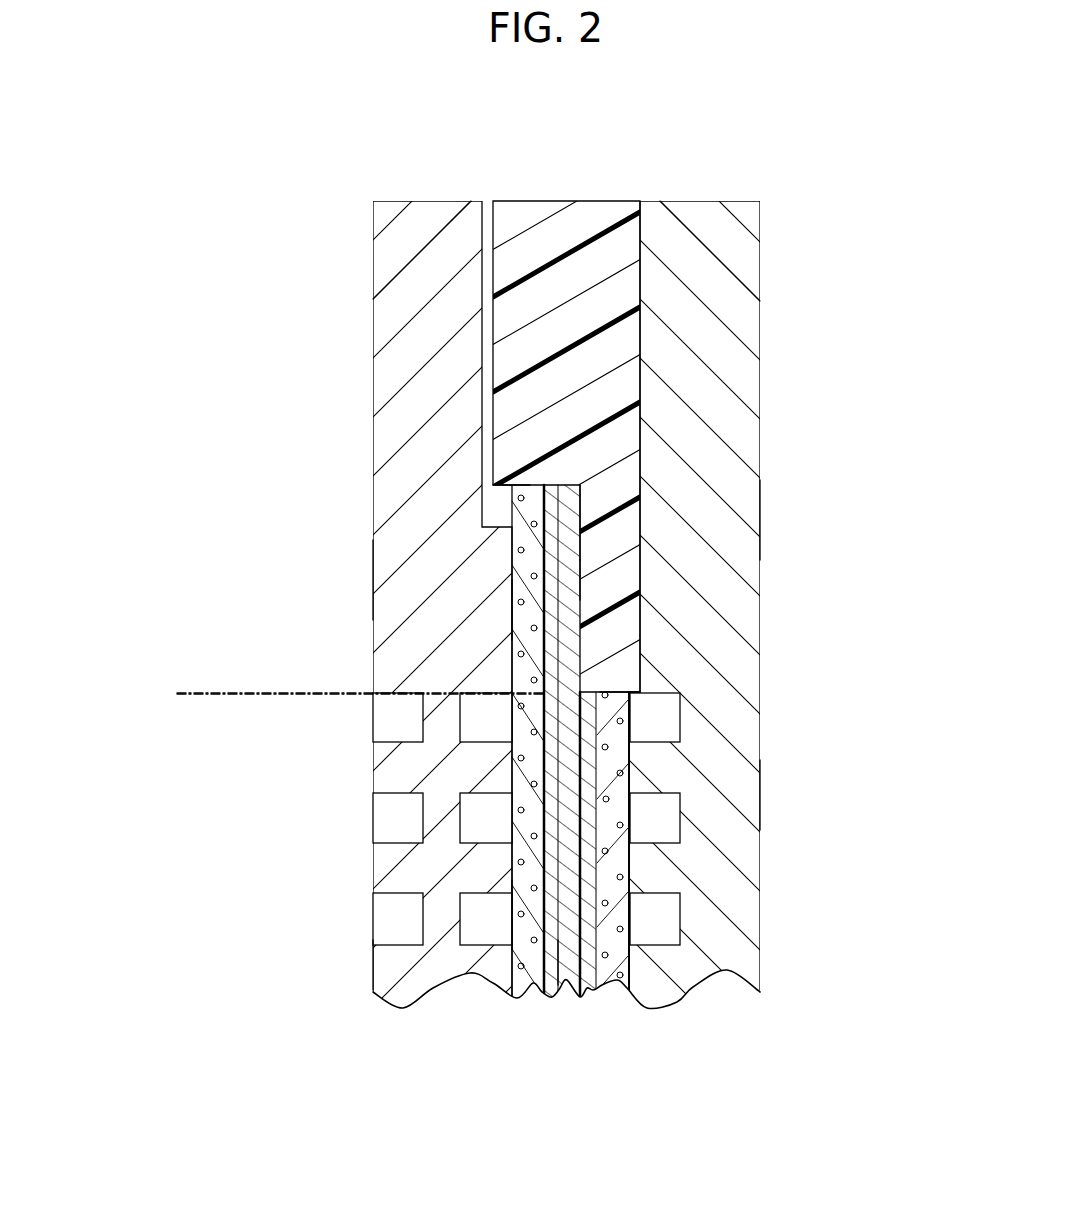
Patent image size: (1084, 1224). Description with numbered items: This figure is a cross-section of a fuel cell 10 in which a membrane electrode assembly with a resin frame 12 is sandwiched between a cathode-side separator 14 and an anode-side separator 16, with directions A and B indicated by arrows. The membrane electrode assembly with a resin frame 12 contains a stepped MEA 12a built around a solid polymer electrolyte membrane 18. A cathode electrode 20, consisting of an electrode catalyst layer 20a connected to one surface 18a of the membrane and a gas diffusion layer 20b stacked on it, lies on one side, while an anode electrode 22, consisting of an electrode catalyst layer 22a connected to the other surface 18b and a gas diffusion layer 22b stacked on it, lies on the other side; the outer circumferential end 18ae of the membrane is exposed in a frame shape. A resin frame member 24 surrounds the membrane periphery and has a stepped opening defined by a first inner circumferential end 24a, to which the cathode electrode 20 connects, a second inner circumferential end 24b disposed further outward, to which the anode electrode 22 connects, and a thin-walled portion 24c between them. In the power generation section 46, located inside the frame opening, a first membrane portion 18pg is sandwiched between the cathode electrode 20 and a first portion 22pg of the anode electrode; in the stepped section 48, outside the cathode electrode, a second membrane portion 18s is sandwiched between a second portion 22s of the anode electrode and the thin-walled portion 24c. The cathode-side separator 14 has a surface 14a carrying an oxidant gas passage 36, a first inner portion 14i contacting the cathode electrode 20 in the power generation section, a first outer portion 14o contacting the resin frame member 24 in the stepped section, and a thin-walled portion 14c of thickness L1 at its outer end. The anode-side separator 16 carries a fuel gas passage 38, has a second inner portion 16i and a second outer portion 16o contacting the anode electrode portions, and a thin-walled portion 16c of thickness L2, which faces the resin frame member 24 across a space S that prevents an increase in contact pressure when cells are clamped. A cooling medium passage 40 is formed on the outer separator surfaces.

The fuel cell 10 is at (310, 115).
The membrane electrode assembly with a resin frame 12 is at (569, 602).
The stepped MEA 12a is at (569, 794).
The cathode-side separator 14 is at (542, 571).
The surface of the cathode-side separator 14a is at (632, 900).
The thin-walled portion of the cathode-side separator 14c is at (735, 381).
The first inner portion 14i is at (762, 795).
The first outer portion 14o is at (760, 519).
The anode-side separator 16 is at (542, 571).
The thin-walled portion of the anode-side separator 16c is at (440, 318).
The second inner portion 16i is at (373, 961).
The second outer portion 16o is at (373, 578).
The solid polymer electrolyte membrane 18 is at (676, 772).
The one surface of the solid polymer electrolyte membrane 18a is at (593, 950).
The other surface of the solid polymer electrolyte membrane 18b is at (547, 950).
The second membrane portion 18s is at (585, 578).
The outer circumferential end of the solid polymer electrolyte membrane 18ae is at (585, 550).
The first membrane portion 18pg is at (583, 767).
The cathode electrode 20 is at (743, 876).
The electrode catalyst layer of the cathode electrode 20a is at (615, 860).
The gas diffusion layer of the cathode electrode 20b is at (597, 806).
The anode electrode 22 is at (395, 772).
The electrode catalyst layer of the anode electrode 22a is at (525, 856).
The gas diffusion layer of the anode electrode 22b is at (548, 803).
The second portion of the anode electrode 22s is at (515, 606).
The first portion of the anode electrode 22pg is at (520, 913).
The resin frame member 24 is at (568, 438).
The first inner circumferential end 24a is at (632, 722).
The second inner circumferential end 24b is at (495, 532).
The thin-walled portion of the resin frame member 24c is at (617, 488).
The oxidant gas passage 36 is at (662, 695).
The fuel gas passage 38 is at (465, 690).
The cooling medium passage 40 is at (385, 723).
The power generation section 46 is at (212, 694).
The stepped section 48 is at (212, 693).
The space S is at (513, 165).
The thickness of the thin-walled portion of the cathode-side separator L1 is at (629, 692).
The thickness of the thin-walled portion of the anode-side separator L2 is at (511, 511).
The direction A is at (866, 979).
The direction B is at (847, 1057).